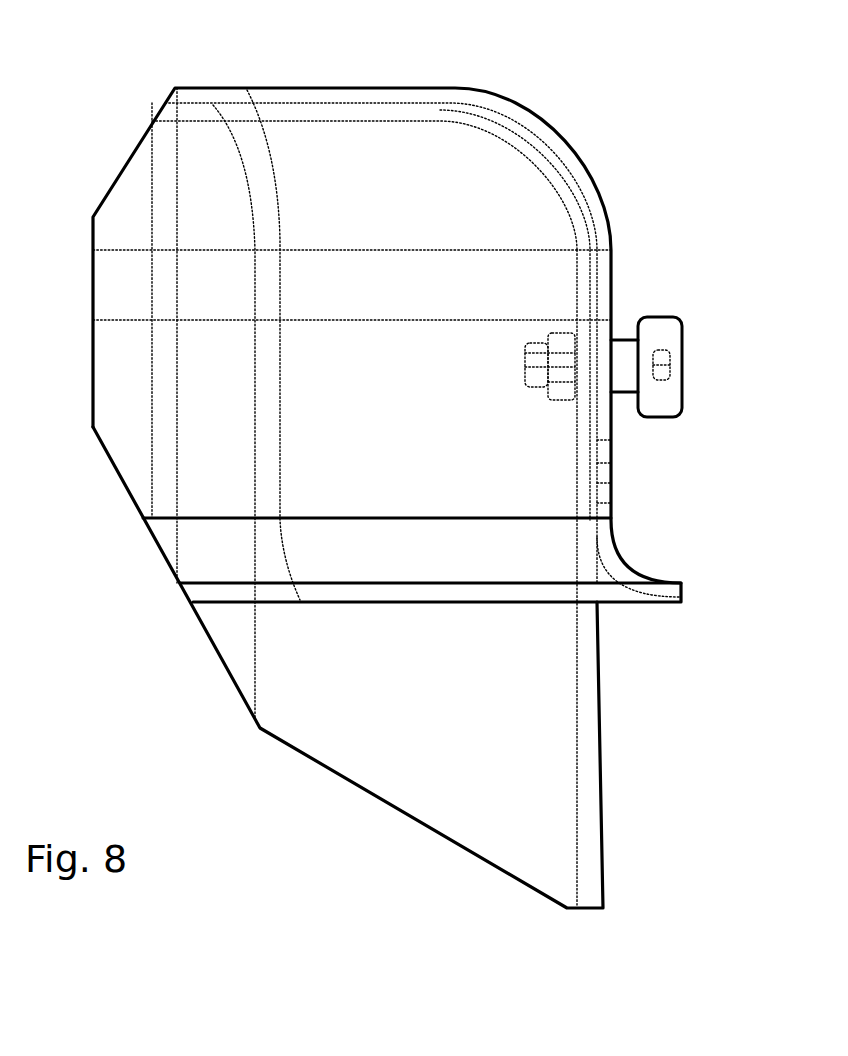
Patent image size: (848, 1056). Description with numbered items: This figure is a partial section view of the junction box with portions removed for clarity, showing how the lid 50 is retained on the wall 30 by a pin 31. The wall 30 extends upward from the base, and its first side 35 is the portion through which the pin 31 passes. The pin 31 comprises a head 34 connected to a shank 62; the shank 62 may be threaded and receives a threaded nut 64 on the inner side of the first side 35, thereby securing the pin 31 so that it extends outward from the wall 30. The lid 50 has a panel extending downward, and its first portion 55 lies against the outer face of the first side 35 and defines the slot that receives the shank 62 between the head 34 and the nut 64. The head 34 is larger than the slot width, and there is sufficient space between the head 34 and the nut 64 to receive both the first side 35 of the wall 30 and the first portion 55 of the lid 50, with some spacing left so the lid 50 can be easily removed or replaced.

The wall 30 is at (298, 660).
The pin 31 is at (610, 330).
The head 34 is at (662, 347).
The first side 35 is at (583, 450).
The lid 50 is at (540, 107).
The first portion 55 is at (603, 427).
The shank 62 is at (619, 373).
The nut 64 is at (560, 382).